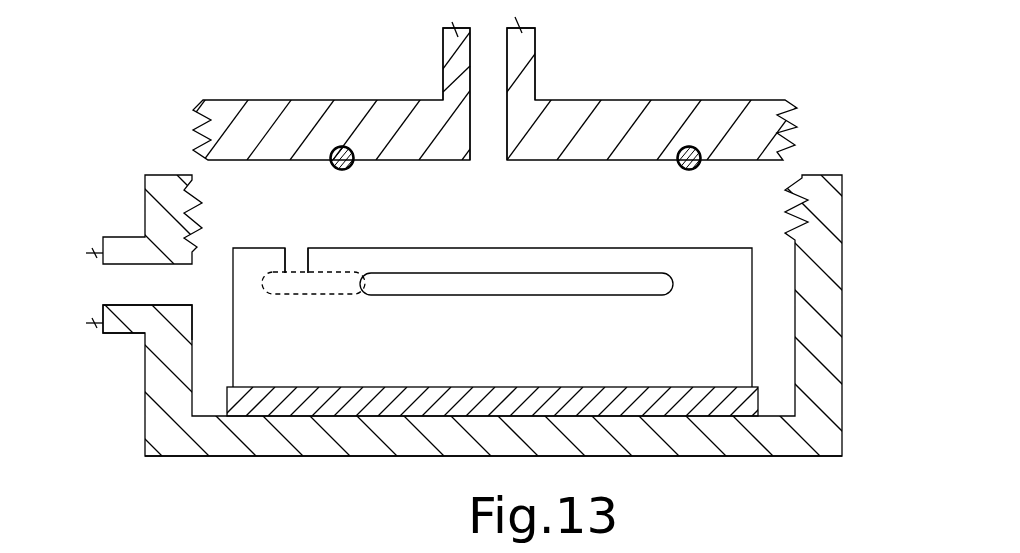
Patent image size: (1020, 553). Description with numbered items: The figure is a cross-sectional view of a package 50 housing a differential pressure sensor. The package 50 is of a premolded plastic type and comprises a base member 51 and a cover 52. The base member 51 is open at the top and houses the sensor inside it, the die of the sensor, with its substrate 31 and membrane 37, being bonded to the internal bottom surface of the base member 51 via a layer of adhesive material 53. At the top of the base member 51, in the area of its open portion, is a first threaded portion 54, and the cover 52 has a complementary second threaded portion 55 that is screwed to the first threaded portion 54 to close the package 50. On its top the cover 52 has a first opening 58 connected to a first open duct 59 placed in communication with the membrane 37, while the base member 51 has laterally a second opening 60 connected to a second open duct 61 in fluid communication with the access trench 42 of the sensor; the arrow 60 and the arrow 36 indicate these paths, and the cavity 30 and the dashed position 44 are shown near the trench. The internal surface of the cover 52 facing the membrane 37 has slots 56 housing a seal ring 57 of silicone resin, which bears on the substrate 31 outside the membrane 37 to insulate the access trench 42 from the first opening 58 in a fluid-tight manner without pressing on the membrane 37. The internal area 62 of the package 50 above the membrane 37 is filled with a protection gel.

The chamber 30 is at (766, 305).
The substrate 31 is at (732, 352).
The flow direction arrow 36 is at (658, 284).
The membrane 37 is at (578, 258).
The access trench 42 is at (294, 258).
The phantom channel position 44 is at (344, 283).
The package 50 is at (532, 109).
The base member 51 is at (817, 418).
The cover 52 is at (570, 108).
The layer of adhesive material 53 is at (598, 390).
The first threaded portion 54 is at (202, 198).
The second threaded portion 55 is at (192, 118).
The slots 56 is at (351, 161).
The seal ring 57 is at (335, 167).
The first opening 58 is at (489, 131).
The first open duct 59 is at (527, 52).
The second opening 60 is at (166, 283).
The second open duct 61 is at (138, 333).
The internal area 62 is at (500, 215).